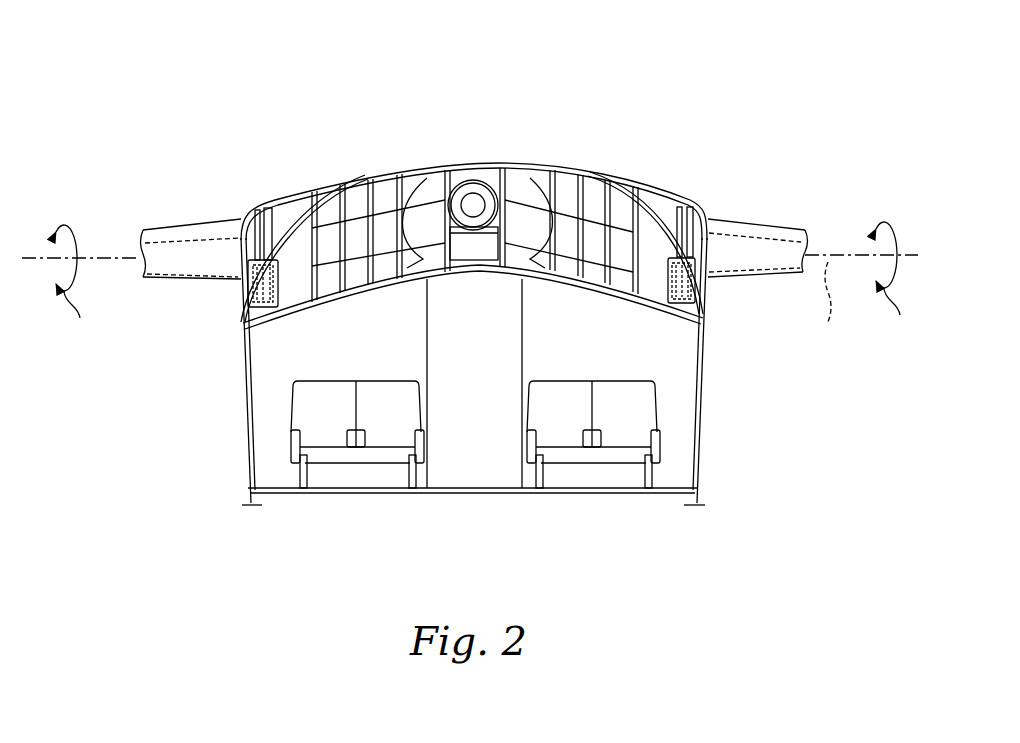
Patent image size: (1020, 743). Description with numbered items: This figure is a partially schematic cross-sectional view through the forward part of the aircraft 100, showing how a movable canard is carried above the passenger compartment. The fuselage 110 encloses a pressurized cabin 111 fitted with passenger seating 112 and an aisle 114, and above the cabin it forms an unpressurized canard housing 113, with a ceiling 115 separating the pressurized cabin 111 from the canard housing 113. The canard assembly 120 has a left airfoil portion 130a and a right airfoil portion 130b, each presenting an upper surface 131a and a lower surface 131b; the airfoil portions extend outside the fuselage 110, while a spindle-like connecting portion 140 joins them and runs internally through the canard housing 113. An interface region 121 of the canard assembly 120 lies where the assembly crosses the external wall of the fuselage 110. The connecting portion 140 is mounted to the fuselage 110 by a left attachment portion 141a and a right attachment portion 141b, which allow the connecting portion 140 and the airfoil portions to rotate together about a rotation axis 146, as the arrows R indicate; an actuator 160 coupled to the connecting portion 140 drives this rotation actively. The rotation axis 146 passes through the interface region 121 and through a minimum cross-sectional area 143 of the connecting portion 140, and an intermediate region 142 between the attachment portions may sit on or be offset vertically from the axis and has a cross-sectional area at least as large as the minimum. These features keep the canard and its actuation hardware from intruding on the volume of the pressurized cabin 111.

The aircraft 100 is at (176, 72).
The fuselage 110 is at (243, 444).
The pressurized cabin 111 is at (273, 348).
The passenger seating 112 is at (345, 470).
The canard housing 113 is at (484, 166).
The aisle 114 is at (472, 460).
The ceiling 115 is at (303, 320).
The canard assembly 120 is at (332, 142).
The interface region 121 is at (244, 198).
The left airfoil portion 130a is at (750, 218).
The right airfoil portion 130b is at (190, 233).
The upper surface 131a is at (793, 227).
The lower surface 131b is at (760, 279).
The connecting portion 140 is at (592, 226).
The left attachment portion 141a is at (669, 209).
The right attachment portion 141b is at (277, 210).
The intermediate region 142 is at (428, 190).
The minimum cross-sectional area 143 is at (714, 286).
The rotation axis 146 is at (835, 307).
The actuator 160 is at (472, 198).